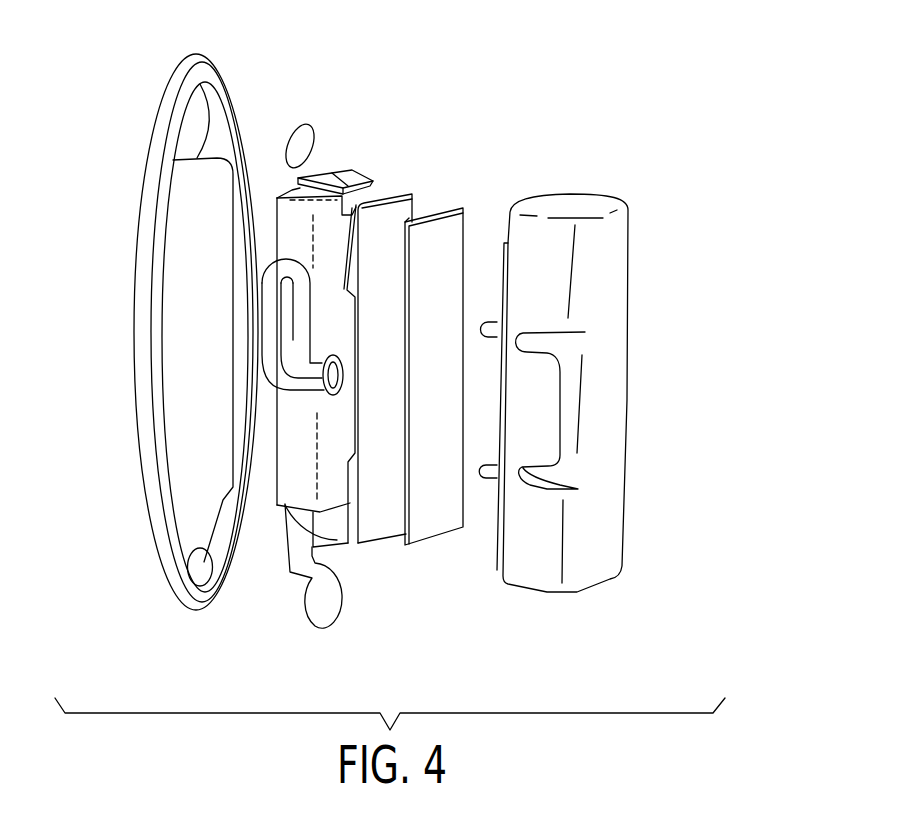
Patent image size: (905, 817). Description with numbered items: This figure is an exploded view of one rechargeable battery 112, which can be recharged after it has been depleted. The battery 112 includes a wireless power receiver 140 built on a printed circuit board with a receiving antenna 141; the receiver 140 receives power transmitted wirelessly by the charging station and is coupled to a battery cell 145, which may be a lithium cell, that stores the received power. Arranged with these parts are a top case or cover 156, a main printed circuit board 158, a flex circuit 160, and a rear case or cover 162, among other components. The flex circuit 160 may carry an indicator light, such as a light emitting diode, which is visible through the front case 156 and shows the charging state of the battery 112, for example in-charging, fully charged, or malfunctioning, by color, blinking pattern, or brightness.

The battery 112 is at (522, 48).
The wireless power receiver 140 is at (437, 562).
The receiving antenna 141 is at (443, 200).
The battery cell 145 is at (275, 172).
The top case or cover 156 is at (142, 240).
The main printed circuit board 158 is at (382, 193).
The flex circuit 160 is at (327, 627).
The rear case or cover 162 is at (607, 275).